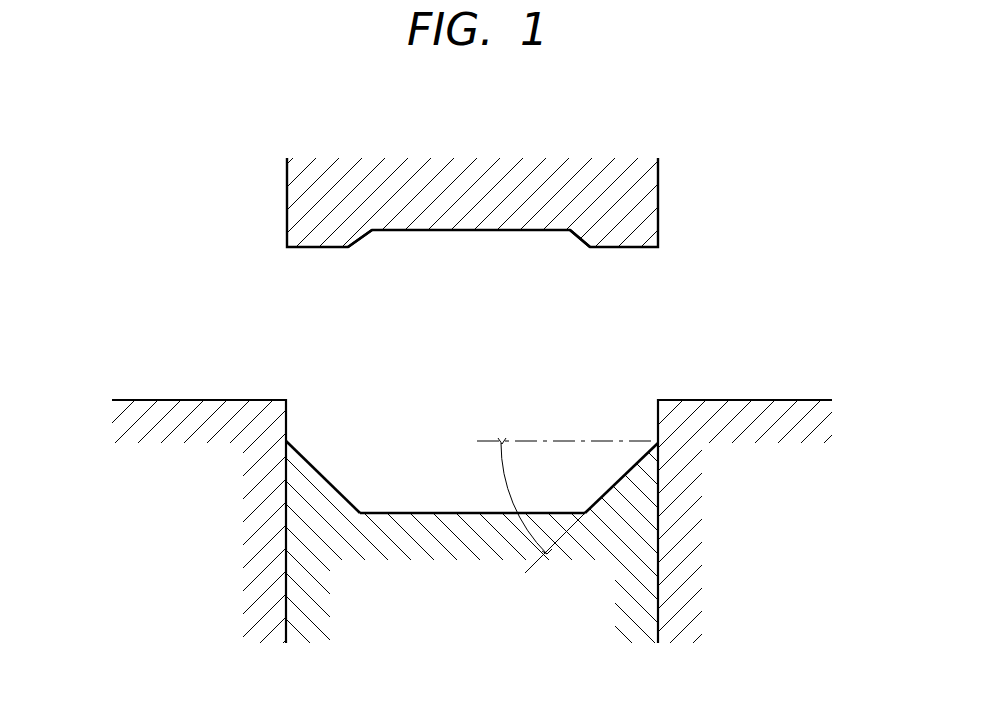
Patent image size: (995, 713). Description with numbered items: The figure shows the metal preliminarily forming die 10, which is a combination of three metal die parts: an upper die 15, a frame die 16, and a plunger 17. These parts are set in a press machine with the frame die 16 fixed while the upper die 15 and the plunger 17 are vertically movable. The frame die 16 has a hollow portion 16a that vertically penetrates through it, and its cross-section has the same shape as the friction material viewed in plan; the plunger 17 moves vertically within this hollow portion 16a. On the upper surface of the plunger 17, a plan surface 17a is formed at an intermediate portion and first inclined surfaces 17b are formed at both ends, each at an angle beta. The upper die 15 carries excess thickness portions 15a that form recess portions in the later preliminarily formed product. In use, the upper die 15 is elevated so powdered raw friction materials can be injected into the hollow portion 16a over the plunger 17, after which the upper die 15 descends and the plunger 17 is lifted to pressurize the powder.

The metal preliminarily forming die 10 is at (152, 238).
The upper die 15 is at (658, 202).
The excess thickness portion 15a is at (620, 240).
The frame die 16 is at (177, 400).
The hollow portion 16a is at (487, 423).
The plunger 17 is at (472, 520).
The plan surface 17a is at (413, 513).
The first inclined surface 17b is at (325, 477).